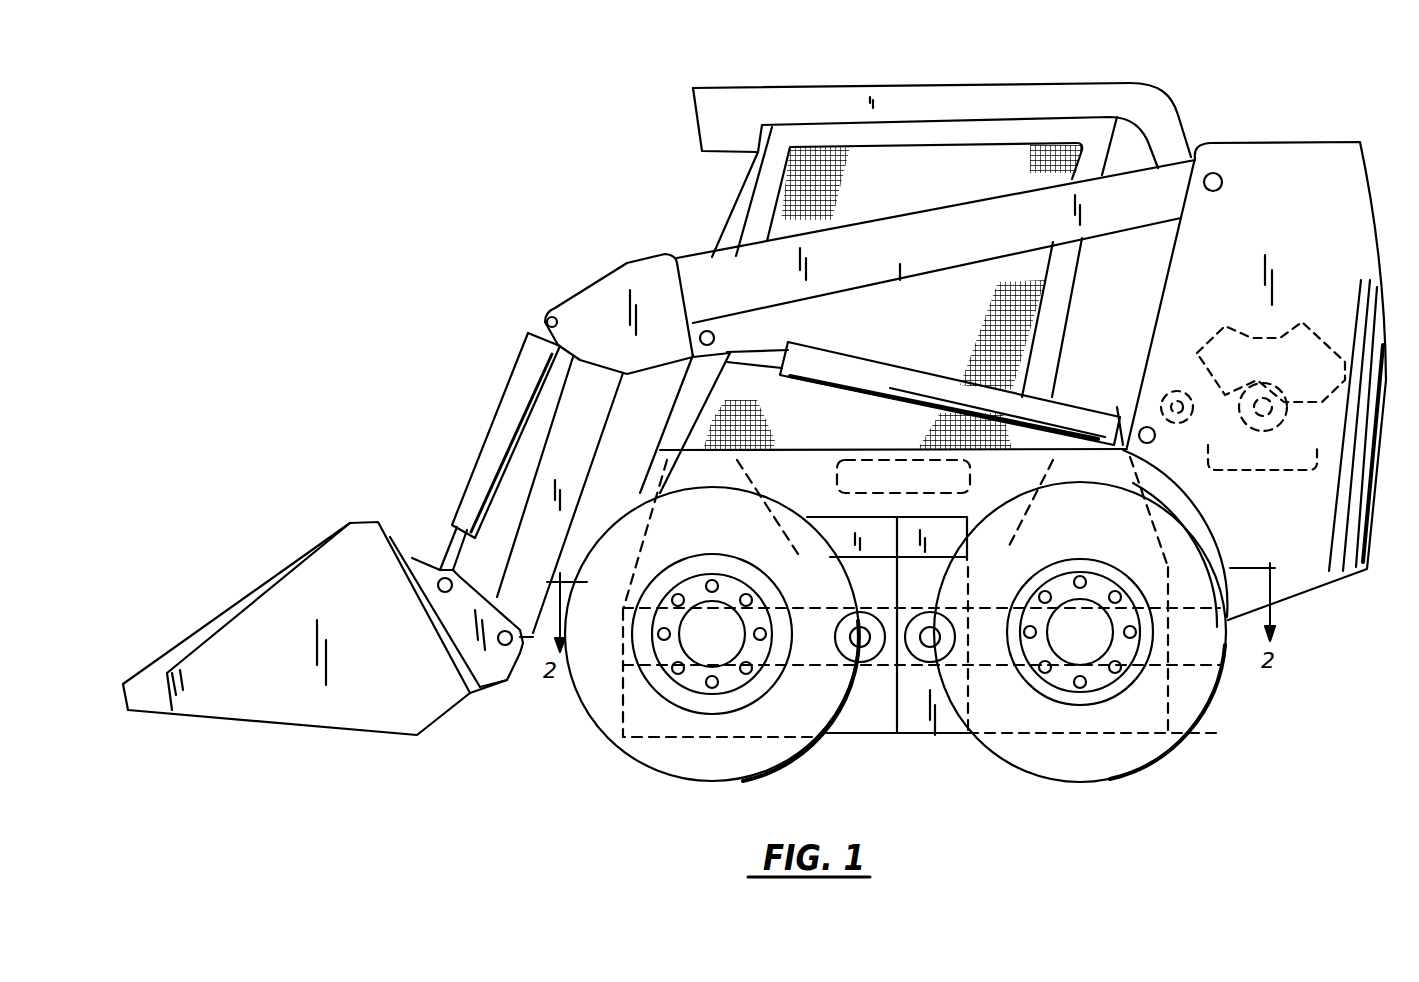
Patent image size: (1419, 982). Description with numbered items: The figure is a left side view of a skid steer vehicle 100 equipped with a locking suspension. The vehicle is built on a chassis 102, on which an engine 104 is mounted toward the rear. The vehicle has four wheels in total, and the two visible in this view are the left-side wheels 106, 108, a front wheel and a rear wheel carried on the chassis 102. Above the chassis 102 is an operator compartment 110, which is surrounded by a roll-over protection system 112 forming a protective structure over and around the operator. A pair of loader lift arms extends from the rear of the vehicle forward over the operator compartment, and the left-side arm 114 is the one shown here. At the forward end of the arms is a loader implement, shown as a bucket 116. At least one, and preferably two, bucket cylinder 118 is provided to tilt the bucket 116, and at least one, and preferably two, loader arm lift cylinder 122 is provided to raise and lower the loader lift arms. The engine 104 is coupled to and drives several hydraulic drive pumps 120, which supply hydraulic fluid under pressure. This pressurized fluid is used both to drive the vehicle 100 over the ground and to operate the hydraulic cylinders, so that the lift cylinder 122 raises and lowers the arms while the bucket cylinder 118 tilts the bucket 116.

The skid steer vehicle 100 is at (600, 180).
The chassis 102 is at (932, 723).
The engine 104 is at (1304, 322).
The left-side wheel 106 is at (602, 713).
The left-side wheel 108 is at (1207, 723).
The operator compartment 110 is at (907, 167).
The roll-over protection system 112 is at (812, 88).
The left-side loader lift arm 114 is at (863, 277).
The bucket 116 is at (343, 713).
The bucket cylinder 118 is at (512, 400).
The hydraulic drive pumps 120 is at (1160, 400).
The loader arm lift cylinder 122 is at (890, 372).